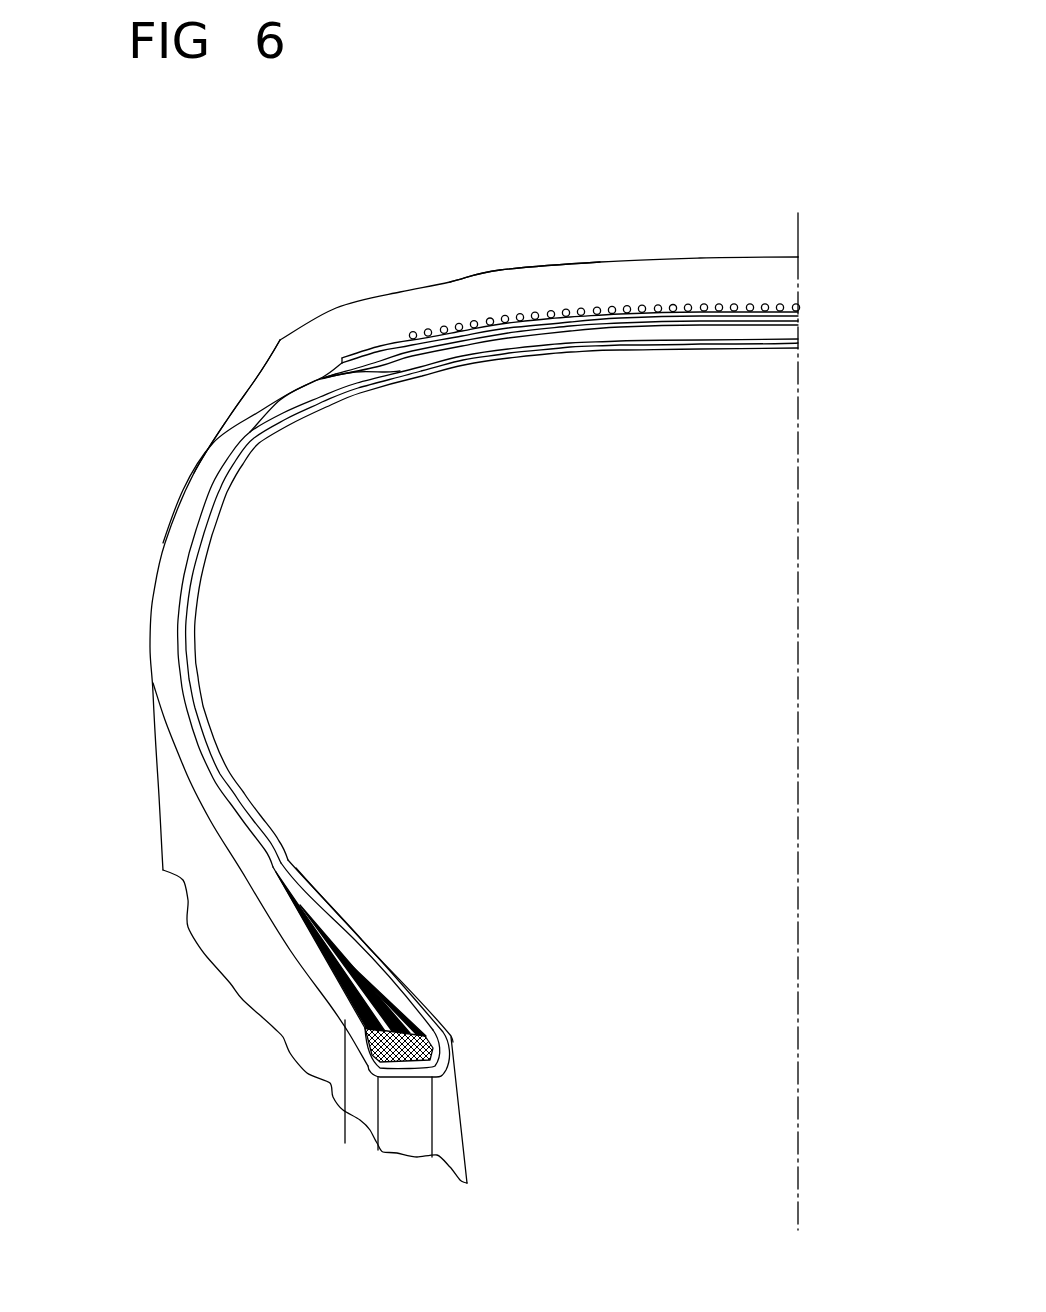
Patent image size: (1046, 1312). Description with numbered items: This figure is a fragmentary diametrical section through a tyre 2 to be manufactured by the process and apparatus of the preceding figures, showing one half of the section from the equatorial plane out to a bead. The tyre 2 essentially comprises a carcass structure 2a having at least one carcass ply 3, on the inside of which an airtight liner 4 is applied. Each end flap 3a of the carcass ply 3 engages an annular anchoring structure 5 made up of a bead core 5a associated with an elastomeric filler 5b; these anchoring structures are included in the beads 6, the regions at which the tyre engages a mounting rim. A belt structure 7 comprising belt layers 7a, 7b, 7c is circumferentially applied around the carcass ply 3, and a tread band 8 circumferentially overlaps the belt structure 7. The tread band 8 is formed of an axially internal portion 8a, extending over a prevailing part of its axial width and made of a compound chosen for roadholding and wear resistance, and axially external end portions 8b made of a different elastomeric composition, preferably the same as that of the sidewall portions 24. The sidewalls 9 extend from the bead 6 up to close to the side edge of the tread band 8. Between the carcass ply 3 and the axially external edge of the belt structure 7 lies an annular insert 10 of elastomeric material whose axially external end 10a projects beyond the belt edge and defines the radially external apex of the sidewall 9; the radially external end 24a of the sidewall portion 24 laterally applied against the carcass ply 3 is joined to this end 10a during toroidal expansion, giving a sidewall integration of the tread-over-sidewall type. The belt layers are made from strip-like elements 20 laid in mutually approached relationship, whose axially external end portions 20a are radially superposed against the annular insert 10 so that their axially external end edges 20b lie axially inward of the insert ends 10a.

The tyre 2 is at (115, 699).
The carcass structure 2a is at (323, 897).
The carcass ply 3 is at (230, 800).
The end flap 3a is at (355, 1020).
The liner 4 is at (605, 350).
The annular anchoring structure 5 is at (367, 958).
The bead core 5a is at (432, 1040).
The elastomeric filler 5b is at (333, 963).
The bead 6 is at (423, 985).
The belt structure 7 is at (757, 302).
The first belt layer 7a is at (603, 333).
The belt layer 7b is at (567, 322).
The belt layer 7c is at (523, 318).
The tread band 8 is at (716, 257).
The axially internal portion 8a is at (663, 275).
The axially external end portion 8b is at (240, 393).
The sidewall 9 is at (148, 610).
The annular insert 10 is at (342, 393).
The axially external end 10a is at (277, 413).
The strip-like element 20 is at (798, 307).
The axially external end portion 20a is at (363, 363).
The axially external end edge 20b is at (327, 387).
The sidewall portion 24 is at (165, 562).
The radially external end 24a is at (233, 447).